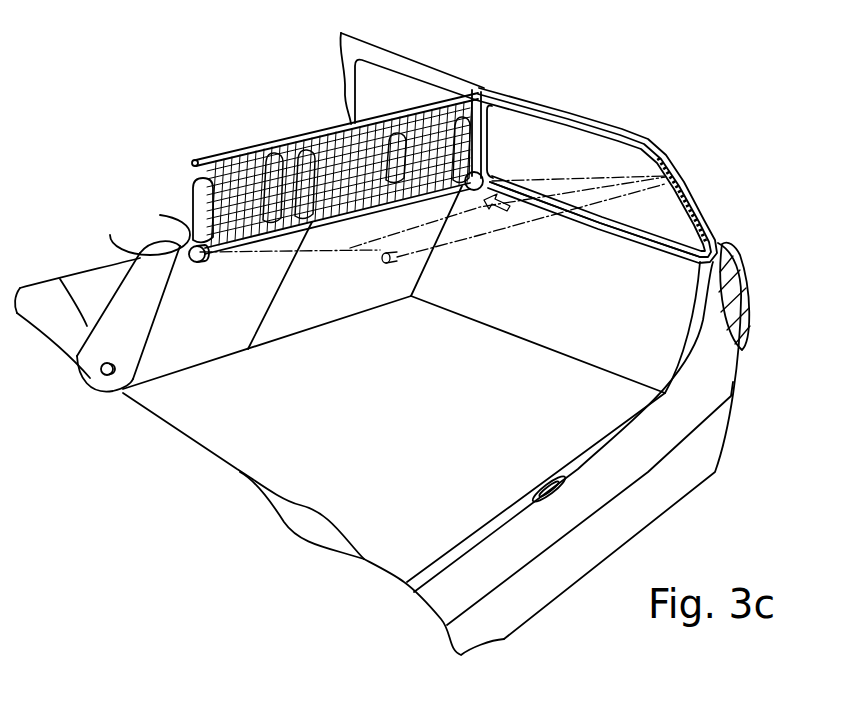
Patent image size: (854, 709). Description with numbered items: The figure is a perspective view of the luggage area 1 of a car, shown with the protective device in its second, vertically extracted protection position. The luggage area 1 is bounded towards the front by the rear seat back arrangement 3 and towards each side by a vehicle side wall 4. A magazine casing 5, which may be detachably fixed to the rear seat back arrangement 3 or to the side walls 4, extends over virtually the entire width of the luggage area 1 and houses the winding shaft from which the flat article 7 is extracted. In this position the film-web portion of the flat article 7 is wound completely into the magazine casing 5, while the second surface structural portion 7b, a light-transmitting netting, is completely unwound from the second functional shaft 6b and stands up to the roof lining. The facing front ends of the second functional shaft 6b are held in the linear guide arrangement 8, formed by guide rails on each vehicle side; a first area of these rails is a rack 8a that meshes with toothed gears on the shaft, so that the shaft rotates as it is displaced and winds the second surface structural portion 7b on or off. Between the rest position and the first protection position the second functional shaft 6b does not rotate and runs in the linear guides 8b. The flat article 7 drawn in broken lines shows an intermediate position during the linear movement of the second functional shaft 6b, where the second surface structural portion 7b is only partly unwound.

The luggage area 1 is at (300, 458).
The rear seat back arrangement 3 is at (327, 303).
The vehicle side wall 4 is at (561, 309).
The magazine casing 5 is at (148, 249).
The second functional shaft 6b is at (203, 161).
The flat article 7 is at (197, 173).
The second surface structural portion 7b is at (398, 134).
The linear guide arrangement 8 is at (565, 108).
The rack 8a is at (698, 200).
The linear guides 8b is at (626, 233).